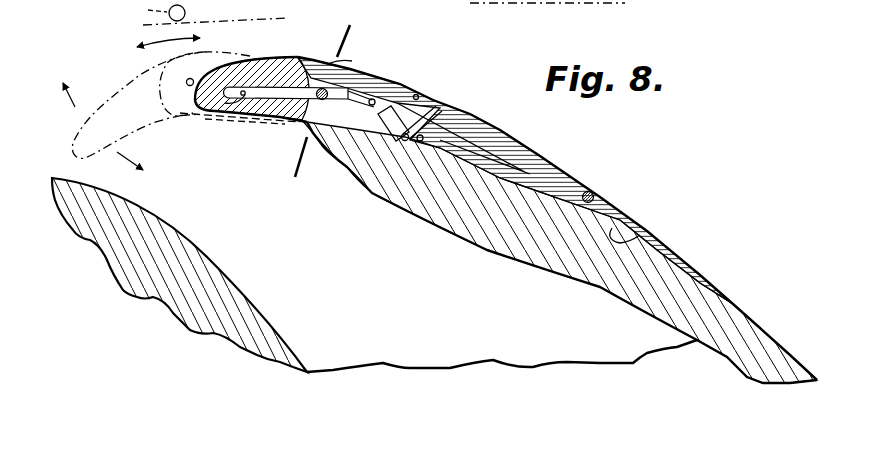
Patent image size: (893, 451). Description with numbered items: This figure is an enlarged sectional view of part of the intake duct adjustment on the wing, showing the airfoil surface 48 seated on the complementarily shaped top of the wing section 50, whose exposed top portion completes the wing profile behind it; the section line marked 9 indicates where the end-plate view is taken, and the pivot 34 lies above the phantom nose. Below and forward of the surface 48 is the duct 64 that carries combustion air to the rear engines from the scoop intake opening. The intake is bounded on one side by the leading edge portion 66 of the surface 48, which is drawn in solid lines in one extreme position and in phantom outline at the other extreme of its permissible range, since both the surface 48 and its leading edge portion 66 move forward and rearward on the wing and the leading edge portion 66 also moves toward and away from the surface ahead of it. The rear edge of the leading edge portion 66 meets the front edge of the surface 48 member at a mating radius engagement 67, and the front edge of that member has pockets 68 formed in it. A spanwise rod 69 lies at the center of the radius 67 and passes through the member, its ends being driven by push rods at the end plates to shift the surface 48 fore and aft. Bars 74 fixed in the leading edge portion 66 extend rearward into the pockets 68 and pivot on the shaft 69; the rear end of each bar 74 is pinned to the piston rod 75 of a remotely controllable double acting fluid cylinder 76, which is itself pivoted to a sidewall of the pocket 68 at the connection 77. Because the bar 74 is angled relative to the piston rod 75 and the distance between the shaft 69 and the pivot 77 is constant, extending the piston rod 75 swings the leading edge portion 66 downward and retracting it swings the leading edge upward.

The section line of FIG. 9 is at (340, 35).
The hinge axis 34 is at (148, 10).
The airfoil surface 48 is at (545, 175).
The wing section 50 is at (625, 238).
The duct 64 is at (374, 275).
The leading edge portion 66 is at (287, 57).
The mating radius engagement 67 is at (337, 66).
The pocket 68 is at (452, 130).
The rod 69 is at (322, 99).
The bar 74 is at (213, 116).
The piston rod 75 is at (380, 111).
The double acting fluid cylinder 76 is at (417, 94).
The pivotal connection 77 is at (441, 112).